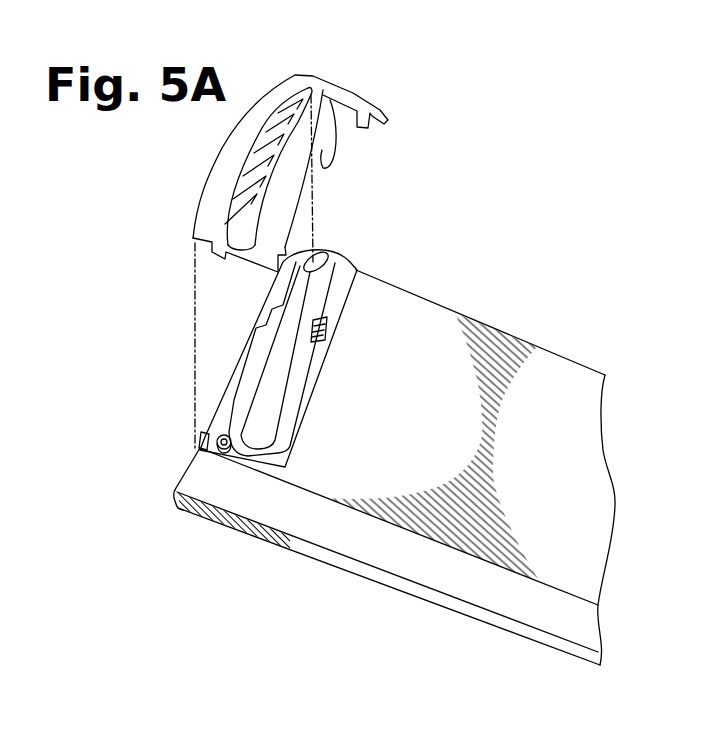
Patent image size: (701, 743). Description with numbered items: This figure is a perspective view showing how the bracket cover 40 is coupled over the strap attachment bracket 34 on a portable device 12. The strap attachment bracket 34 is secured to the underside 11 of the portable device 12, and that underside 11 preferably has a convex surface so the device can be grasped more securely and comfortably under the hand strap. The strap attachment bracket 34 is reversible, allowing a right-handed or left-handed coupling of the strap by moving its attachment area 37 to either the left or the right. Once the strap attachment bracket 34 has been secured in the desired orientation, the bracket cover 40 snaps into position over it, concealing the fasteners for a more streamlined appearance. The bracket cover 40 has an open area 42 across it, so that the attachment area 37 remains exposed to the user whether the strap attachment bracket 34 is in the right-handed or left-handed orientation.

The underside 11 is at (416, 320).
The portable device 12 is at (505, 283).
The strap attachment bracket 34 is at (236, 316).
The attachment area 37 is at (326, 255).
The bracket cover 40 is at (338, 60).
The open area 42 is at (247, 217).